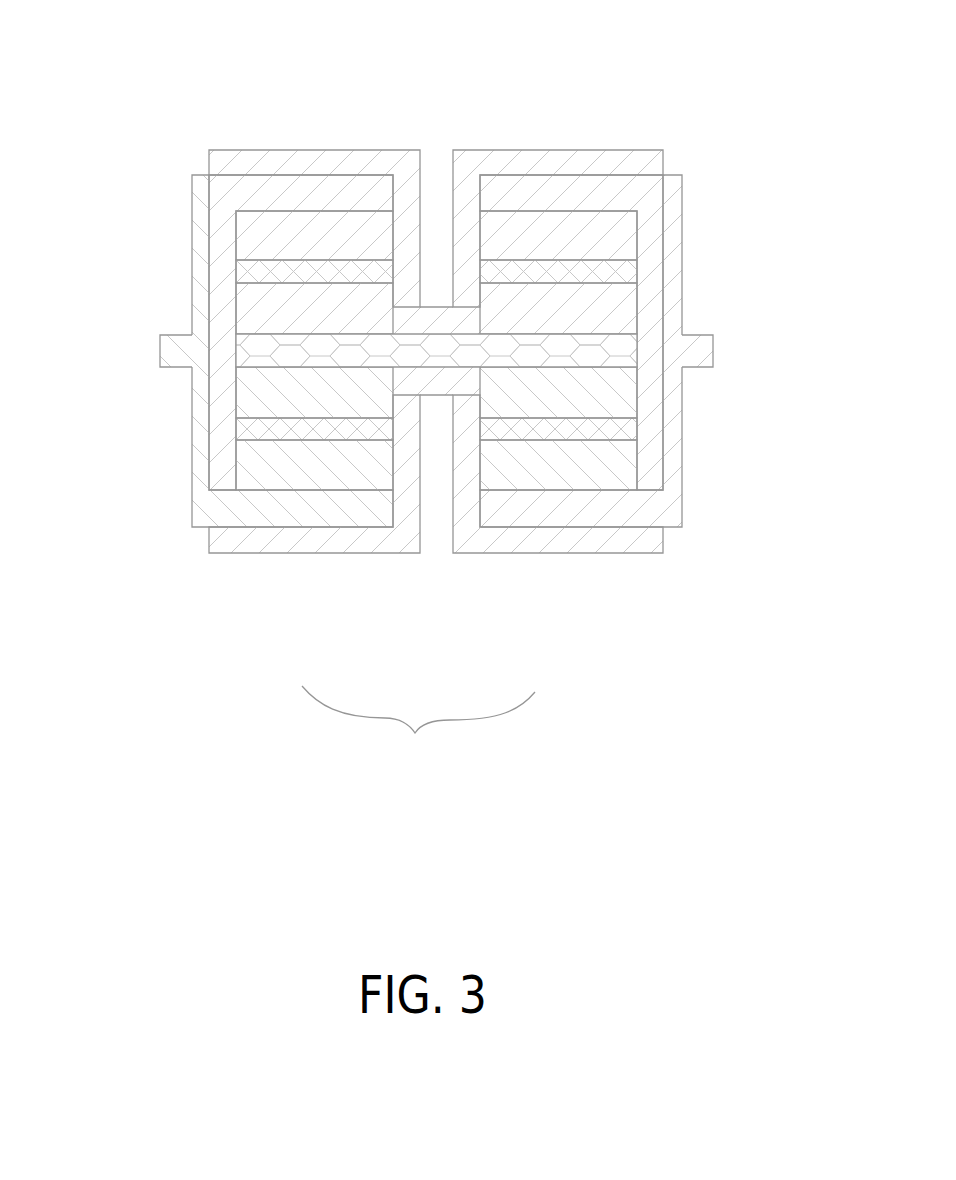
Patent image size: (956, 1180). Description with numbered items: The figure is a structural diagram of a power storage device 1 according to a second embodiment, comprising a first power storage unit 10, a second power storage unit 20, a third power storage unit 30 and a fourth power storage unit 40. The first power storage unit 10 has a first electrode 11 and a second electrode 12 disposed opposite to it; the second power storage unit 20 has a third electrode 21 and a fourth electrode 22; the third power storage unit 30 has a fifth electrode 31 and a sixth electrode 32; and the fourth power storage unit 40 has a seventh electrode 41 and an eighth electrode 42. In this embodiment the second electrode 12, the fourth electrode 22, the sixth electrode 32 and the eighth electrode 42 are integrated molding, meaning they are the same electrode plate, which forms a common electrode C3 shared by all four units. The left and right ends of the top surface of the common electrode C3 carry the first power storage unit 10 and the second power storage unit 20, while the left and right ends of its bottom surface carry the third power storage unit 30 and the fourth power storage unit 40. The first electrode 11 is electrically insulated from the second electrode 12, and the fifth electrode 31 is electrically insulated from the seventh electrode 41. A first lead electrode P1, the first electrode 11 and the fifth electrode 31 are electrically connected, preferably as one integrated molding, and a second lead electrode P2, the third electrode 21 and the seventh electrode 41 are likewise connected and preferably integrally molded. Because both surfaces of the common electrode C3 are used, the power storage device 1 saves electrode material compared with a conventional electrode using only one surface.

The power storage device 1 is at (700, 195).
The first power storage unit 10 is at (342, 125).
The first electrode 11 is at (270, 195).
The second electrode 12 is at (277, 340).
The second power storage unit 20 is at (485, 125).
The third electrode 21 is at (567, 190).
The fourth electrode 22 is at (600, 342).
The third power storage unit 30 is at (262, 580).
The fifth electrode 31 is at (252, 513).
The sixth electrode 32 is at (270, 360).
The fourth power storage unit 40 is at (621, 580).
The seventh electrode 41 is at (620, 515).
The eighth electrode 42 is at (605, 360).
The first lead electrode P1 is at (175, 355).
The second lead electrode P2 is at (698, 350).
The common electrode C3 is at (418, 731).